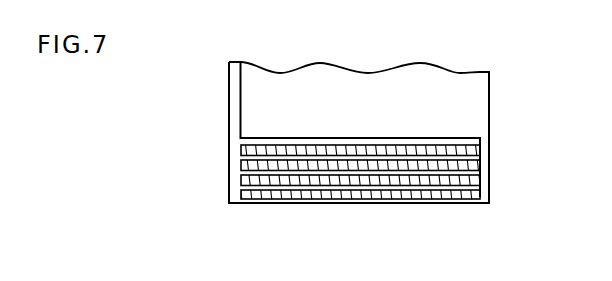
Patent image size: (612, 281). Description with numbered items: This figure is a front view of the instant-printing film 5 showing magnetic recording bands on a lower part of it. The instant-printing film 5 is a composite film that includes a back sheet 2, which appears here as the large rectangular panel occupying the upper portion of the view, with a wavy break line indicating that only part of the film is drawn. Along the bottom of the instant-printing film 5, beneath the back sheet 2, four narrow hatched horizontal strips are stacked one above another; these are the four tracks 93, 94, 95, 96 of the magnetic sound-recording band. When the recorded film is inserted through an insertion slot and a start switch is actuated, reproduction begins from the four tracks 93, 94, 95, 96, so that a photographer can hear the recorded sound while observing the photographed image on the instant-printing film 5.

The back sheet 2 is at (448, 84).
The instant-printing film 5 is at (490, 103).
The track 93 is at (481, 147).
The track 94 is at (481, 162).
The track 95 is at (481, 177).
The track 96 is at (490, 193).